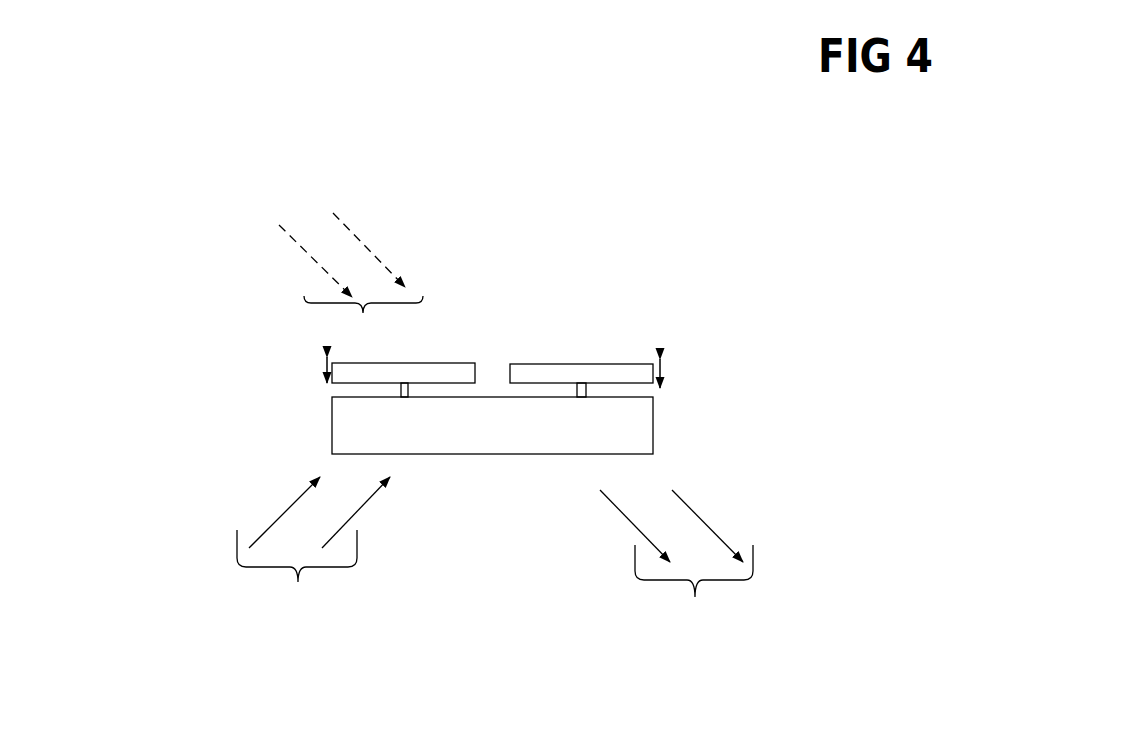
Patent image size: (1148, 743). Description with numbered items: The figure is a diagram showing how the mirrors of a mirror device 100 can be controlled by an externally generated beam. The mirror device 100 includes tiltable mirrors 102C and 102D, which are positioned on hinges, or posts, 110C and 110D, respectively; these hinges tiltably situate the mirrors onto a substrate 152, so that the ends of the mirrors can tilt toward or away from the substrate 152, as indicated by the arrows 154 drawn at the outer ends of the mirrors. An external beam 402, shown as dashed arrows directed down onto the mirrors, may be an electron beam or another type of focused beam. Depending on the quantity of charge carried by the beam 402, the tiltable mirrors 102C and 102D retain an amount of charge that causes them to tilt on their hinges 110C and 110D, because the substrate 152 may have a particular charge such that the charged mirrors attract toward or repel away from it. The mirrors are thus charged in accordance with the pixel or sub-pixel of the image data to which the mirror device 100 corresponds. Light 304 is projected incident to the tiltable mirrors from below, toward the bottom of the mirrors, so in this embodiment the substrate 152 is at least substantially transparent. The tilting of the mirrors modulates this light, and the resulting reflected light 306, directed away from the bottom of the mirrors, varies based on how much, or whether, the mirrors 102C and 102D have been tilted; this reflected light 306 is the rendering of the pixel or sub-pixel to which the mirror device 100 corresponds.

The mirror device 100 is at (161, 283).
The tiltable mirror 102C is at (484, 331).
The tiltable mirror 102D is at (647, 331).
The hinge 110C is at (404, 397).
The hinge 110D is at (583, 397).
The substrate 152 is at (653, 446).
The arrows 154 is at (326, 374).
The light 304 is at (313, 547).
The reflected light 306 is at (676, 561).
The external beam 402 is at (351, 280).